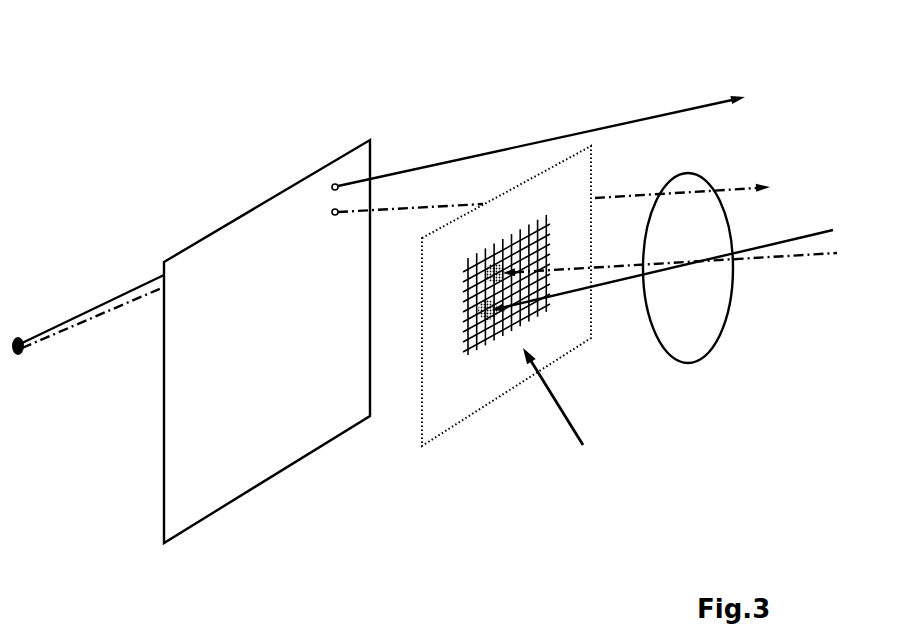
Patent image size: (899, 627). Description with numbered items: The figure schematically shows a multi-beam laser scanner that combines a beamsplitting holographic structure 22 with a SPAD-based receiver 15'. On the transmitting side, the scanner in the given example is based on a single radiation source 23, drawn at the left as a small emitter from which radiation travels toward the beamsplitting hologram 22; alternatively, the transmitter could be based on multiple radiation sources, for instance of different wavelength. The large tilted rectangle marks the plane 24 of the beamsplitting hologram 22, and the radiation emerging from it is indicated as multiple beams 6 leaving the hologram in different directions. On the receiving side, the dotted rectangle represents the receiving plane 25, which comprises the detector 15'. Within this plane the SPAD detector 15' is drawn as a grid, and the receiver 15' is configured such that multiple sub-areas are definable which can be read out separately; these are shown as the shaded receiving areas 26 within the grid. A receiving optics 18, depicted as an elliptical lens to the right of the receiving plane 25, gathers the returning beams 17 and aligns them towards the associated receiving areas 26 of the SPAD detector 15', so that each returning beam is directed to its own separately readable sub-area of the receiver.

The light beams 6 is at (745, 183).
The SPAD-based receiver 15' is at (591, 405).
The returning beams 17 is at (790, 255).
The receiving optics 18 is at (730, 299).
The beamsplitting holographic structure 22 is at (212, 339).
The plane of the beamsplitting hologram 24 is at (267, 341).
The radiation source 23 is at (57, 382).
The receiving plane 25 is at (508, 332).
The receiving areas 26 is at (432, 363).